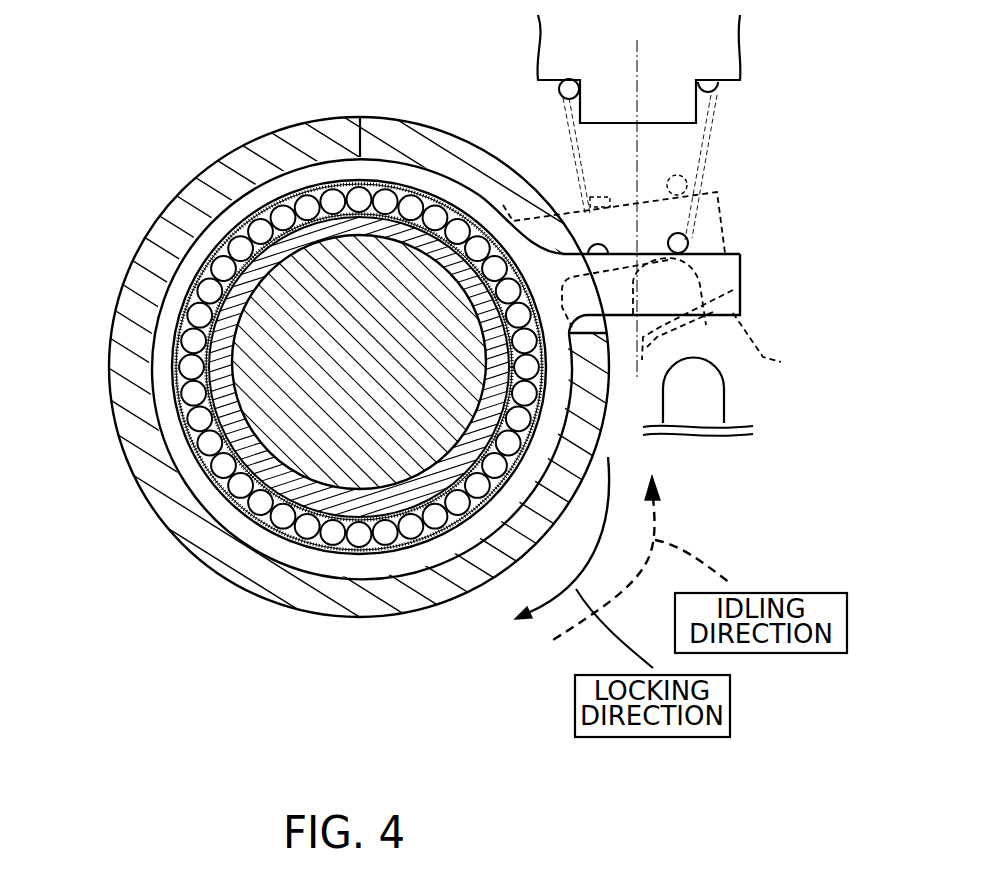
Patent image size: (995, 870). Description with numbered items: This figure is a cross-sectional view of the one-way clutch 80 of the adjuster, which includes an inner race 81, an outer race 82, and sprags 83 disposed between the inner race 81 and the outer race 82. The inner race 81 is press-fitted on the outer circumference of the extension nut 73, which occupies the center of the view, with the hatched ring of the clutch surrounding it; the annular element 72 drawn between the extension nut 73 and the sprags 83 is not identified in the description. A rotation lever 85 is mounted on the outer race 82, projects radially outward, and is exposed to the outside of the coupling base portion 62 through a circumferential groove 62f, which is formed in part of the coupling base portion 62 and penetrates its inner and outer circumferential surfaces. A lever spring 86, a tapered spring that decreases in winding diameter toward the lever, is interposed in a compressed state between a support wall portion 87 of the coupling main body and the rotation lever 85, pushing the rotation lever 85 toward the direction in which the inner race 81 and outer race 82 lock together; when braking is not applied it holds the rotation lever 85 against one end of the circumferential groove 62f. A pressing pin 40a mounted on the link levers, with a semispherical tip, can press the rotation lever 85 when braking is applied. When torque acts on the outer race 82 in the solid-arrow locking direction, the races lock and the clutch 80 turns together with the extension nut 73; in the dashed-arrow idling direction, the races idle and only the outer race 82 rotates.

The pressing pin 40a is at (725, 378).
The coupling base portion 62 is at (333, 118).
The circumferential groove 62f is at (368, 136).
The inner race 72 is at (278, 263).
The extension nut 73 is at (311, 295).
The one-way clutch 80 is at (297, 417).
The inner race 81 is at (347, 548).
The outer race 82 is at (306, 553).
The sprags 83 is at (412, 532).
The rotation lever 85 is at (742, 254).
The lever spring 86 is at (688, 240).
The support wall portion 87 is at (698, 63).